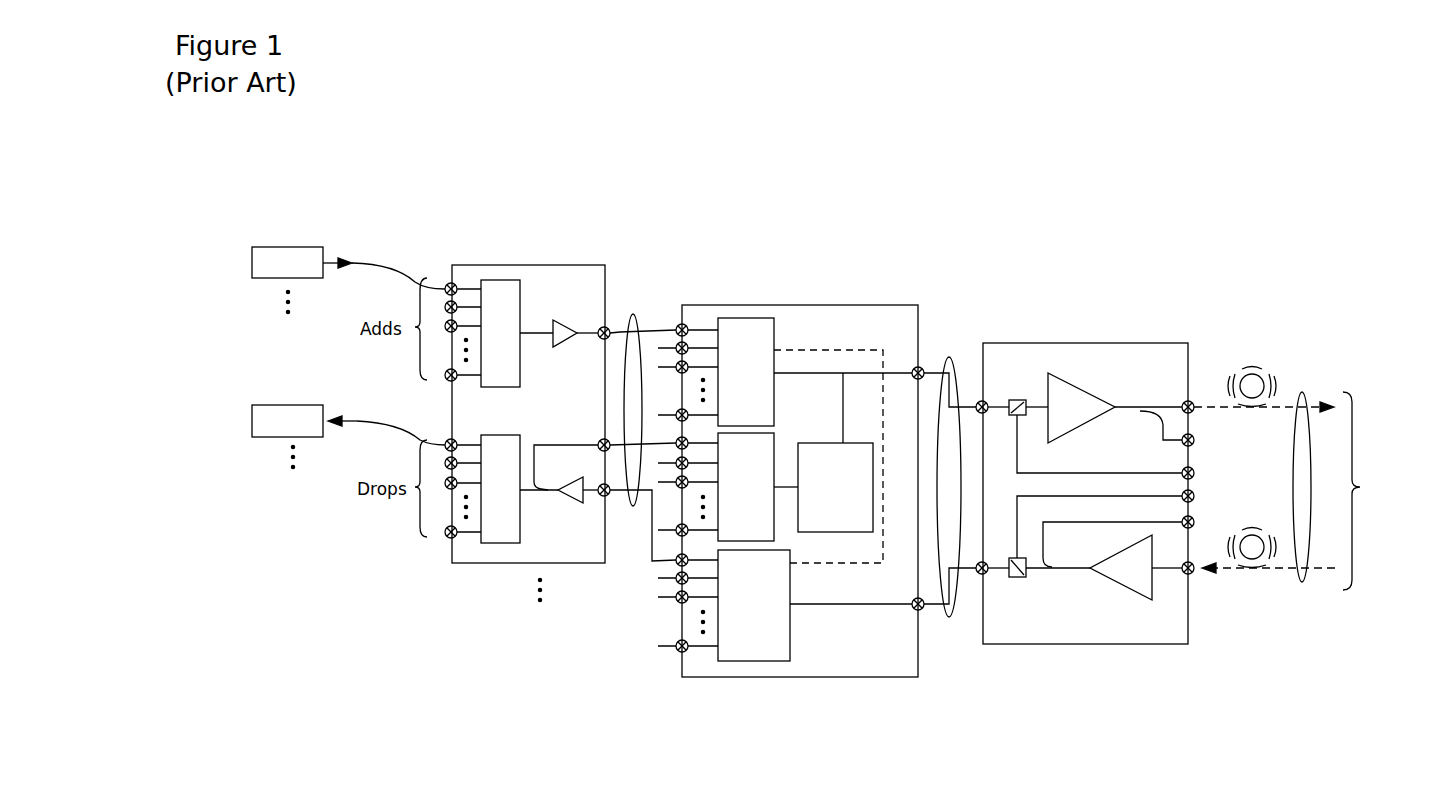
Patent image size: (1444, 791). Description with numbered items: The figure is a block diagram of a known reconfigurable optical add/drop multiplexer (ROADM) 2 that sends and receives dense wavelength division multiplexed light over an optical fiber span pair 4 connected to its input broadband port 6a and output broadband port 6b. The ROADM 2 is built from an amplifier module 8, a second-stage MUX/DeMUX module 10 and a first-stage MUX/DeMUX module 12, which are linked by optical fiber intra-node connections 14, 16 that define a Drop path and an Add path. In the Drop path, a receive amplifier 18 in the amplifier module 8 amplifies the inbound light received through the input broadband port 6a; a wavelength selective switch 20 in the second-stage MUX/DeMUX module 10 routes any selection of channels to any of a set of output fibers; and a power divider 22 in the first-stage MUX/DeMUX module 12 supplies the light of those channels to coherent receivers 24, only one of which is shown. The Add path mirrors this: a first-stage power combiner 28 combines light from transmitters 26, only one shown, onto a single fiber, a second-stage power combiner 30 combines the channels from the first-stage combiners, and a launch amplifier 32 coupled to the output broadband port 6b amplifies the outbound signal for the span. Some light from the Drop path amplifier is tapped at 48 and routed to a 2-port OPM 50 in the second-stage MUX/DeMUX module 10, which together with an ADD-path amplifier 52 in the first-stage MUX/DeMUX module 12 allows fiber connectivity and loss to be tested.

The reconfigurable optical add/drop multiplexer (ROADM) 2 is at (1070, 189).
The optical fiber span pair 4 is at (1300, 392).
The input broadband port 6a is at (1183, 577).
The output broadband port 6b is at (1183, 404).
The amplifier module 8 is at (1093, 343).
The second-stage MUX/DeMUX module 10 is at (847, 305).
The first-stage MUX/DeMUX module 12 is at (540, 265).
The optical fiber intra-node connection 14 is at (634, 315).
The optical fiber intra-node connection 16 is at (946, 357).
The receive amplifier 18 is at (1110, 578).
The wavelength selective switch (WSS) 20 is at (777, 577).
The power divider 22 is at (520, 435).
The coherent receiver 24 is at (276, 405).
The transmitter 26 is at (287, 247).
The first-stage power combiner 28 is at (520, 312).
The second-stage power combiner 30 is at (757, 351).
The launch amplifier 32 is at (1093, 418).
The tap 48 is at (543, 496).
The 2-port OPM 50 is at (832, 443).
The ADD-path amplifier 52 is at (565, 346).